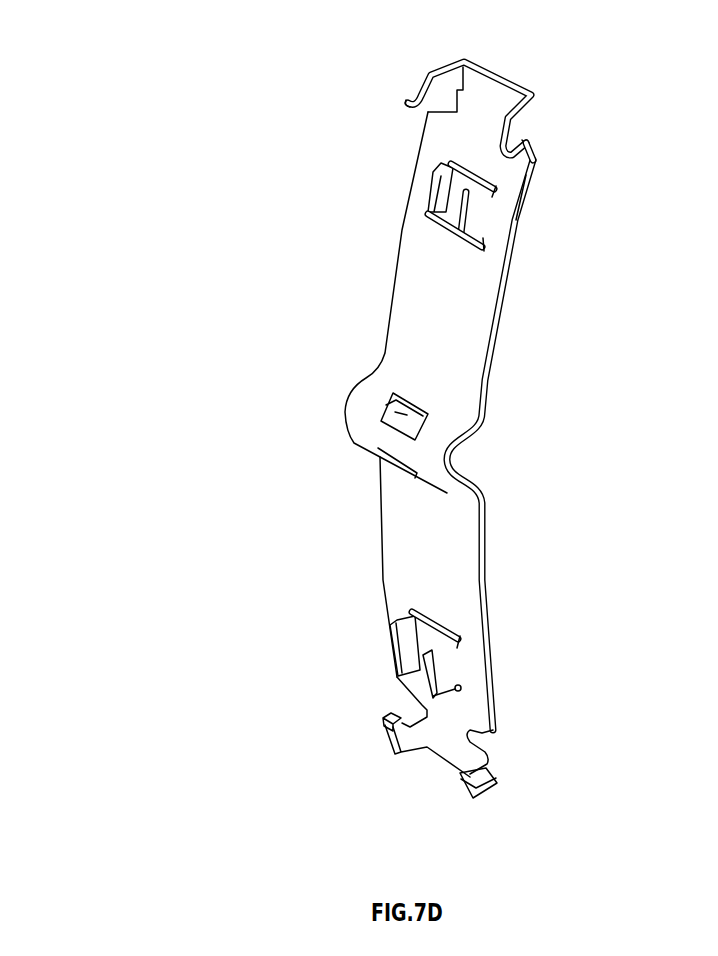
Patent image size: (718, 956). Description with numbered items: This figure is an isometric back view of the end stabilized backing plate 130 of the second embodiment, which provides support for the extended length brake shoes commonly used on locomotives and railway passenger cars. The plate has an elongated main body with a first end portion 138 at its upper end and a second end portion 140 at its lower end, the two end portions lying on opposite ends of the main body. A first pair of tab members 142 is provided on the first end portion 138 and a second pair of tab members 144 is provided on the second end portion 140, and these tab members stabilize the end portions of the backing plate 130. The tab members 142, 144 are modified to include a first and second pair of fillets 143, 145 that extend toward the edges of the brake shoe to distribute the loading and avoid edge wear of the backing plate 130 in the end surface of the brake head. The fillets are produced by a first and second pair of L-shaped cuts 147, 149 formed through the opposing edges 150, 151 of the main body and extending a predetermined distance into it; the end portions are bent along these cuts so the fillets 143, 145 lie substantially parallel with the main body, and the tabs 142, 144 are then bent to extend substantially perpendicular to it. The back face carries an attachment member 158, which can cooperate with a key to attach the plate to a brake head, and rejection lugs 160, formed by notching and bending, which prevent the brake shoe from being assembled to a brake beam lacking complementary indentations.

The end stabilized backing plate 130 is at (280, 293).
The first end portion 138 is at (642, 83).
The second end portion 140 is at (585, 750).
The first pair of tab members 142 is at (427, 78).
The first pair of fillets 143 is at (410, 102).
The second pair of tab members 144 is at (390, 748).
The second pair of fillets 145 is at (388, 718).
The first pair of L-shaped cuts 147 is at (533, 160).
The second pair of L-shaped cuts 149 is at (420, 705).
The opposing edge 150 is at (415, 160).
The opposing edge 151 is at (521, 220).
The attachment member 158 is at (406, 413).
The rejection lug 160 is at (432, 187).